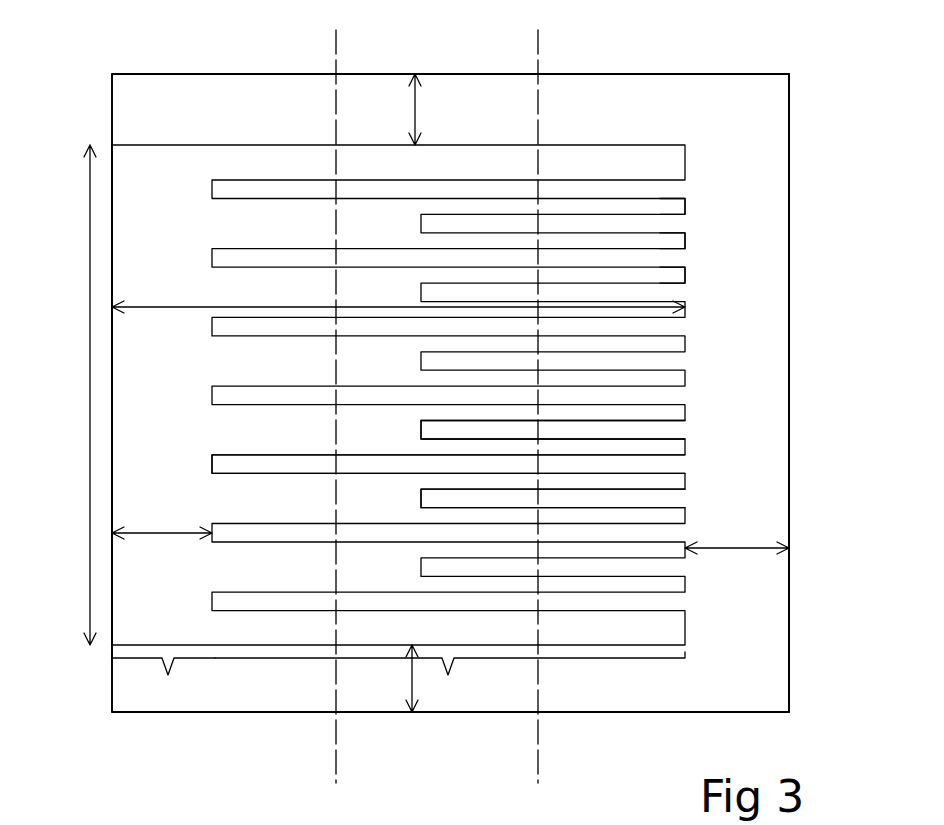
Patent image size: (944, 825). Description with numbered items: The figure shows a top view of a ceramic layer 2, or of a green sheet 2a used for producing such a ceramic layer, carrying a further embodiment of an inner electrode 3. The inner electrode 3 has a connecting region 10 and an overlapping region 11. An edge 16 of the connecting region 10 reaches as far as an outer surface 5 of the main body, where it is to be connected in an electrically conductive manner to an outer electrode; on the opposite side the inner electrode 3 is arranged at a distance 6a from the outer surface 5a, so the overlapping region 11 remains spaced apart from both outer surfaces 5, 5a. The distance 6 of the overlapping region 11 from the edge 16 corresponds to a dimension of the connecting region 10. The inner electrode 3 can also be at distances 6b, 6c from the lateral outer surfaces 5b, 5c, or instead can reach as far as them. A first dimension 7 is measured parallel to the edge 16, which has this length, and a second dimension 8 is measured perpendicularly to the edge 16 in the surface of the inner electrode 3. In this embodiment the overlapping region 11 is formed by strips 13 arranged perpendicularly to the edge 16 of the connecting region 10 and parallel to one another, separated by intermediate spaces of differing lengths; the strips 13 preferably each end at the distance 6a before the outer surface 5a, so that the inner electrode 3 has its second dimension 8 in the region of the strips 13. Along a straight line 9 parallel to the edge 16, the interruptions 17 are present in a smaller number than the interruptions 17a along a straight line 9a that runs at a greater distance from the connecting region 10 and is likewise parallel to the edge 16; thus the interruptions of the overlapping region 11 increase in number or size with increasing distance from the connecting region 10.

The ceramic layer 2 is at (728, 95).
The green sheet 2a is at (450, 393).
The inner electrode 3 is at (208, 162).
The outer surface 5 is at (112, 106).
The outer surface 5a is at (791, 410).
The lateral outer surface 5b is at (276, 714).
The lateral outer surface 5c is at (457, 60).
The distance 6 is at (162, 540).
The distance 6a is at (712, 560).
The distance 6b is at (410, 690).
The distance 6c is at (425, 117).
The first dimension 7 is at (63, 395).
The second dimension 8 is at (192, 307).
The straight line 9 is at (340, 762).
The straight line 9a is at (540, 760).
The connecting region 10 is at (163, 685).
The overlapping region 11 is at (450, 684).
The strips 13 is at (678, 203).
The edge 16 is at (113, 220).
The interruptions 17 is at (337, 462).
The interruptions 17a is at (540, 497).